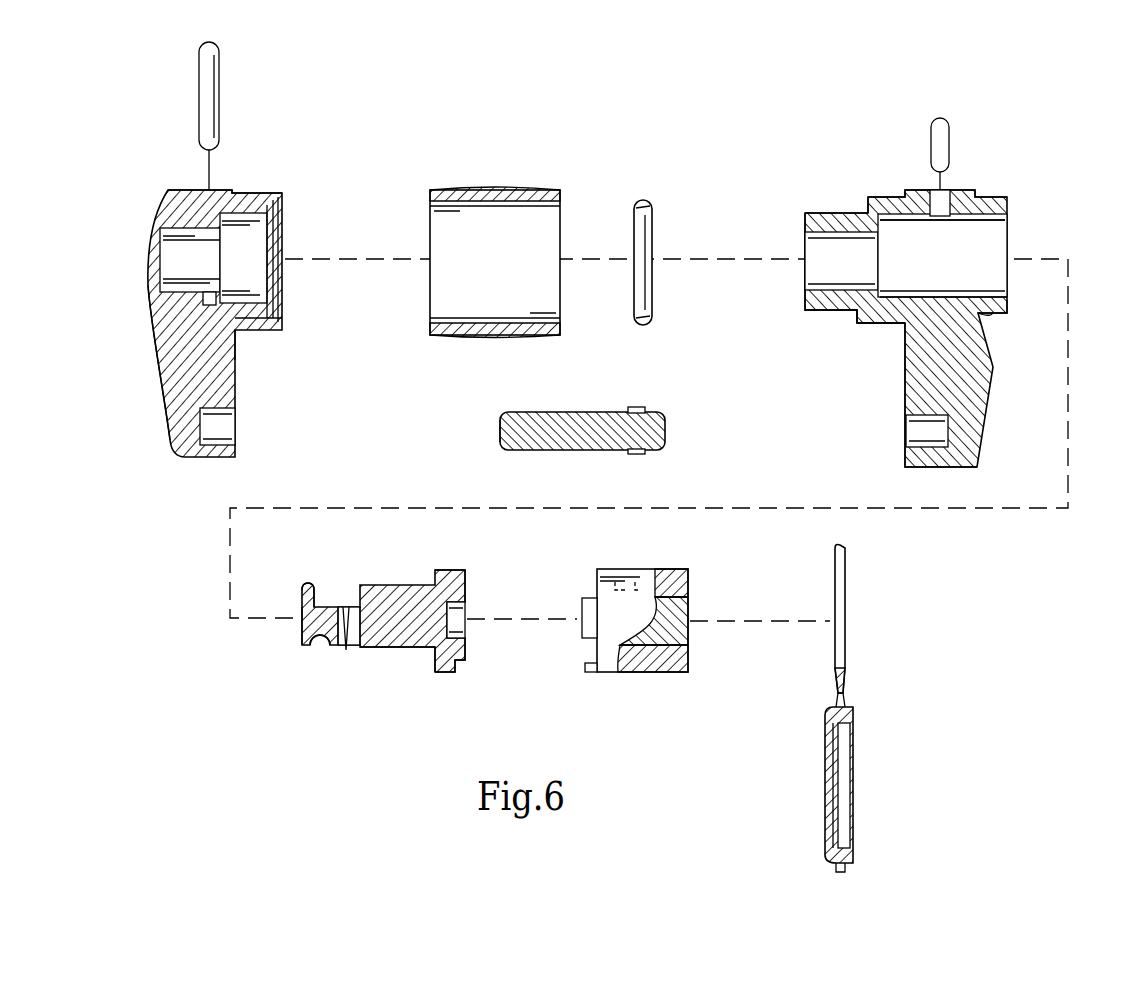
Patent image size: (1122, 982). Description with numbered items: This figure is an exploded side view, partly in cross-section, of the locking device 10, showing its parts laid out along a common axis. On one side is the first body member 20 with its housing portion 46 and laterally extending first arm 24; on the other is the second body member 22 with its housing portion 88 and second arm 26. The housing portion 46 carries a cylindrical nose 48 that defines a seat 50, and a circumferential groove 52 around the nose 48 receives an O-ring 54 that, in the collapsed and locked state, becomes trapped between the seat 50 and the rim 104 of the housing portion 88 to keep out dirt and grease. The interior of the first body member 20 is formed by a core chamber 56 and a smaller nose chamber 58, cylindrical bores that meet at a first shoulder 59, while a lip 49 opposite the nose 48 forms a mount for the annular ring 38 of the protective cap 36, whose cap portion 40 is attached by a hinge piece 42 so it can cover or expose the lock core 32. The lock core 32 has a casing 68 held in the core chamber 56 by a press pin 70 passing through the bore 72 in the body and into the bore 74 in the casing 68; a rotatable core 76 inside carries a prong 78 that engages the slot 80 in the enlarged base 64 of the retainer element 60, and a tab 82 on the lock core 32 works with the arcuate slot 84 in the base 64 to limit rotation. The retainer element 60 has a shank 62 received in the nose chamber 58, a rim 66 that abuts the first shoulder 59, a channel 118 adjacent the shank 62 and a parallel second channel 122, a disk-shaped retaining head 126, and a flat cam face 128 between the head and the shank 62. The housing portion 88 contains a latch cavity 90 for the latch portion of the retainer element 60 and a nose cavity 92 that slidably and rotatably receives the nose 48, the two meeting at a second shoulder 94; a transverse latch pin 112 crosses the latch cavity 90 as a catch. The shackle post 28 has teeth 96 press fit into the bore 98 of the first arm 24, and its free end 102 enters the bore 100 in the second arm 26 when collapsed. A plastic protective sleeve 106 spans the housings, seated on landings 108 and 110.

The locking device 10 is at (778, 100).
The first body member 20 is at (1045, 197).
The second body member 22 is at (160, 162).
The first arm 24 is at (920, 386).
The second arm 26 is at (166, 372).
The shackle post 28 is at (550, 413).
The lock core 32 is at (698, 578).
The protective cap 36 is at (887, 634).
The annular ring 38 is at (846, 549).
The cap portion 40 is at (822, 776).
The hinge piece 42 is at (846, 694).
The housing portion 46 is at (902, 153).
The cylindrical nose 48 is at (822, 217).
The lip 49 is at (1000, 318).
The seat 50 is at (864, 208).
The circumferential groove 52 is at (850, 314).
The O-ring 54 is at (660, 202).
The core chamber 56 is at (942, 255).
The nose chamber 58 is at (841, 261).
The first shoulder 59 is at (882, 223).
The retainer element 60 is at (387, 566).
The shank 62 is at (400, 649).
The enlarged base 64 is at (450, 570).
The rim 66 is at (428, 664).
The casing 68 is at (660, 673).
The press pin 70 is at (946, 126).
The bore 72 is at (950, 187).
The bore 74 is at (630, 567).
The rotatable core 76 is at (680, 616).
The prong 78 is at (582, 606).
The slot 80 is at (462, 628).
The tab 82 is at (585, 667).
The arcuate slot 84 is at (460, 672).
The housing portion 88 is at (252, 166).
The latch cavity 90 is at (190, 266).
The nose cavity 92 is at (275, 718).
The second shoulder 94 is at (240, 334).
The teeth 96 is at (645, 408).
The bore 98 is at (917, 432).
The bore 100 is at (226, 430).
The free end 102 is at (500, 431).
The rim 104 is at (279, 320).
The protective sleeve 106 is at (490, 178).
The landing 108 is at (870, 188).
The landing 110 is at (268, 186).
The latch pin 112 is at (212, 96).
The channel 118 is at (346, 654).
The second channel 122 is at (318, 648).
The retaining head 126 is at (302, 626).
The flat cam face 128 is at (326, 600).